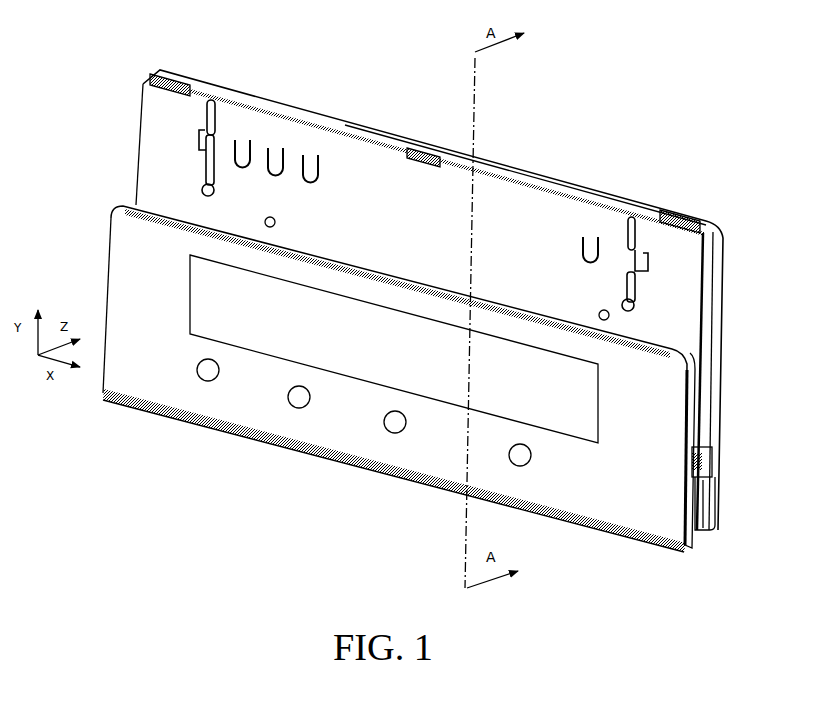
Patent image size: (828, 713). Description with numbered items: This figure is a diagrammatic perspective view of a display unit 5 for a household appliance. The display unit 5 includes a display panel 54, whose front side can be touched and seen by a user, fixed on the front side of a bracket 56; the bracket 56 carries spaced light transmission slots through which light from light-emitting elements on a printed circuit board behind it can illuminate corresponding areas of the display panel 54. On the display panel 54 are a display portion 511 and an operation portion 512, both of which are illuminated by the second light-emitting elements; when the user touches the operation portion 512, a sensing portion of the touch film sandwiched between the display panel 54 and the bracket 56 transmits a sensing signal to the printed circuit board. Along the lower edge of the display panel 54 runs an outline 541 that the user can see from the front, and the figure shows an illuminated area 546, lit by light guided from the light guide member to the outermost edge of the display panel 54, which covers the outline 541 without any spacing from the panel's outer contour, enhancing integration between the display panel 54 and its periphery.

The display unit 5 is at (386, 116).
The bracket 56 is at (487, 197).
The display panel 54 is at (109, 262).
The display portion 511 is at (193, 305).
The operation portion 512 is at (197, 370).
The illuminated area 546 is at (302, 442).
The outline 541 is at (386, 470).